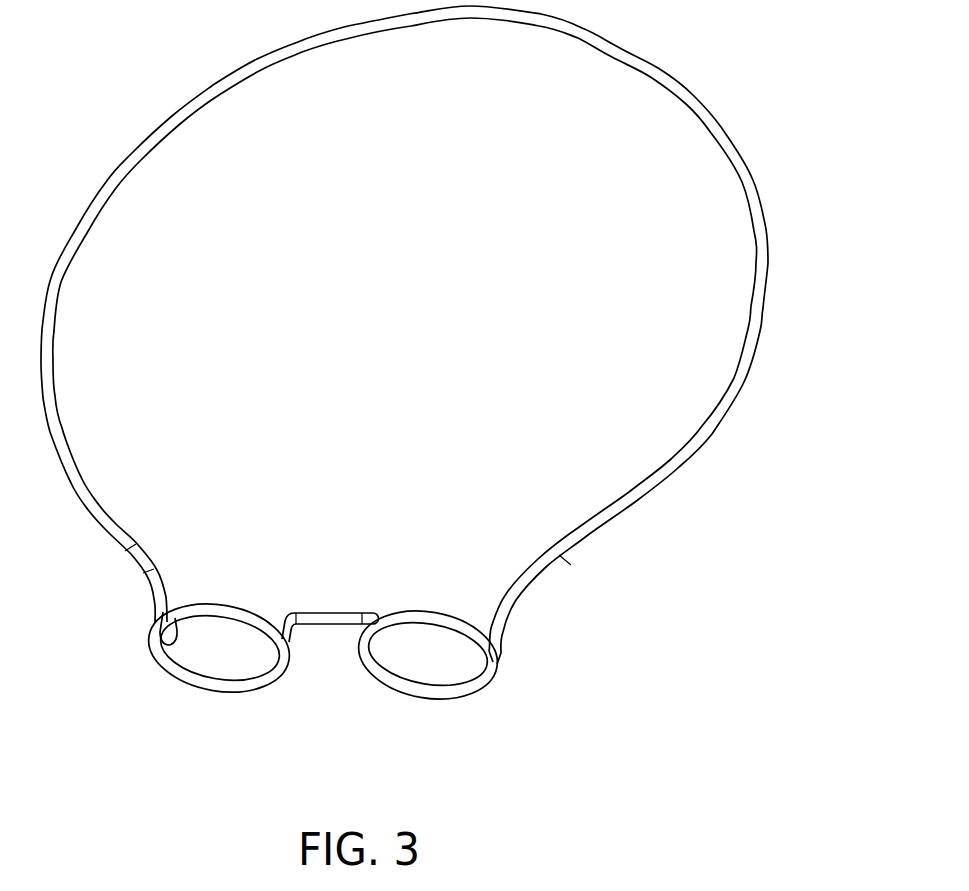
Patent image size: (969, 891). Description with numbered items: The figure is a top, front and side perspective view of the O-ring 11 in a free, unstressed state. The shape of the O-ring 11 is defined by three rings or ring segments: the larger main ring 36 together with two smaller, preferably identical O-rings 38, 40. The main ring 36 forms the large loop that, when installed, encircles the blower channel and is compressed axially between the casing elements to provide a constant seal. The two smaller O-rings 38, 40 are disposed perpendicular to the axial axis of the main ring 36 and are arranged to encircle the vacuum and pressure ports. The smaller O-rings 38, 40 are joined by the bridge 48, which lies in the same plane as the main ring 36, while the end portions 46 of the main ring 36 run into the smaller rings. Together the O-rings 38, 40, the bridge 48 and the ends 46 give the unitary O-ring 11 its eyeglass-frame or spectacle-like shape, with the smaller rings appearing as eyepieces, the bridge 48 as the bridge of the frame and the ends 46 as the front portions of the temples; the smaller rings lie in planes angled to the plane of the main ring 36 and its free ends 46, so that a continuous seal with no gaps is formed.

The O-ring 11 is at (451, 405).
The main ring 36 is at (702, 114).
The smaller O-ring 38 is at (488, 676).
The smaller O-ring 40 is at (186, 672).
The ends of the main O-ring 46 is at (156, 605).
The bridge 48 is at (338, 626).